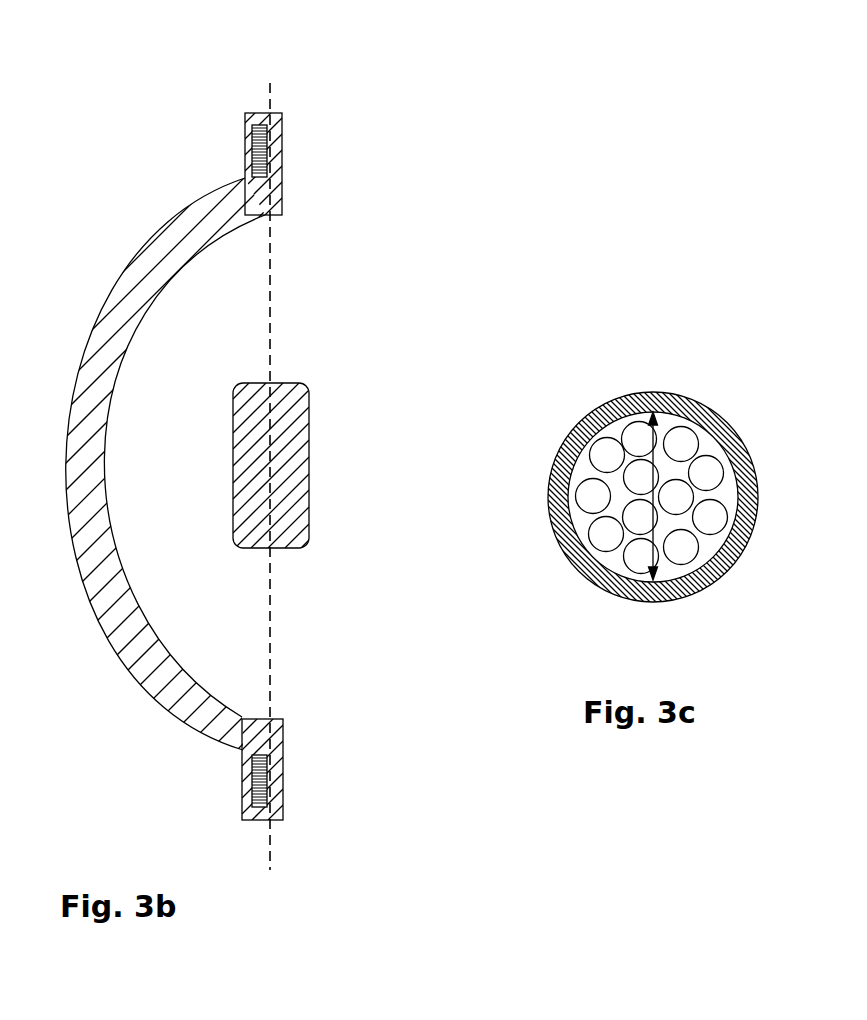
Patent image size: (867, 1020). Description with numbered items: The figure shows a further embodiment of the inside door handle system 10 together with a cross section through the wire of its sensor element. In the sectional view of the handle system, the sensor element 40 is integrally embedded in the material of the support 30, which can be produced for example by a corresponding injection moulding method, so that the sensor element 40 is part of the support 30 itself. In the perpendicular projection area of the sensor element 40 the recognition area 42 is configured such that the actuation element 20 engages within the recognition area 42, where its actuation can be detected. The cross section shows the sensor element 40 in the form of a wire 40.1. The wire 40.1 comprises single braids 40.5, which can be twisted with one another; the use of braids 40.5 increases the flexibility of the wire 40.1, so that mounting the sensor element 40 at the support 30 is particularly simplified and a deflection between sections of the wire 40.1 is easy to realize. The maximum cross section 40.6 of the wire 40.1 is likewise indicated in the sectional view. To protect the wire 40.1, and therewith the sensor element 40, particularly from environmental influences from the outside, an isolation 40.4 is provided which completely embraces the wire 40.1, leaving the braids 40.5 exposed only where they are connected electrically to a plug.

In FIG. 3B, the inside door handle system 10 is at (257, 448).
In FIG. 3B, the actuation element 20 is at (293, 483).
In FIG. 3B, the support 30 is at (276, 198).
In FIG. 3B, the sensor element 40 is at (225, 441).
In FIG. 3C, the sensor element 40 is at (630, 490).
In FIG. 3B, the recognition area 42 is at (298, 347).
In FIG. 3C, the wire 40.1 is at (653, 490).
In FIG. 3C, the isolation 40.4 is at (738, 555).
In FIG. 3C, the braids 40.5 is at (674, 436).
In FIG. 3C, the maximum cross section 40.6 is at (653, 455).